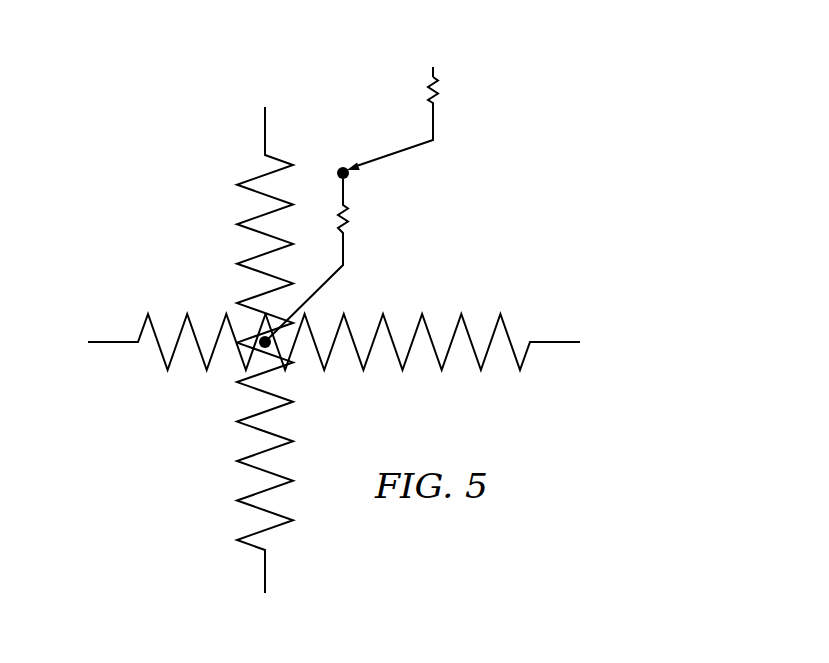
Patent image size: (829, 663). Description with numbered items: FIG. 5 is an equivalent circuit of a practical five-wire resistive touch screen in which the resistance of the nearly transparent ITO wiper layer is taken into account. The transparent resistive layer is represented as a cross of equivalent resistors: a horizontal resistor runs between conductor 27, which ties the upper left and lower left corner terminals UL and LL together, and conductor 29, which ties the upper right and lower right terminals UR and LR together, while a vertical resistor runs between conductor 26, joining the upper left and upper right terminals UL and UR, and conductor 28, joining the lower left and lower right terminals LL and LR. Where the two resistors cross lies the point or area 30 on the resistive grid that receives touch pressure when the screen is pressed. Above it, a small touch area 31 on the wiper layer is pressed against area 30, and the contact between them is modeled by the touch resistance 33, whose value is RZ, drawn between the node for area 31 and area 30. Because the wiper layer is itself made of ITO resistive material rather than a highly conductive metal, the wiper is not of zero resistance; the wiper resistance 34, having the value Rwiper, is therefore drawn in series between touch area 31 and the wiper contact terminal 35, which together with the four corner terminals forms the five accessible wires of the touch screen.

The conductor 26 is at (260, 110).
The conductor 27 is at (90, 341).
The conductor 28 is at (260, 593).
The conductor 29 is at (580, 340).
The touch contact area on resistive layer 30 is at (277, 352).
The touch contact area on wiper 31 is at (342, 163).
The touch resistance 33 is at (350, 220).
The wiper resistance 34 is at (440, 93).
The wiper contact terminal 35 is at (430, 70).